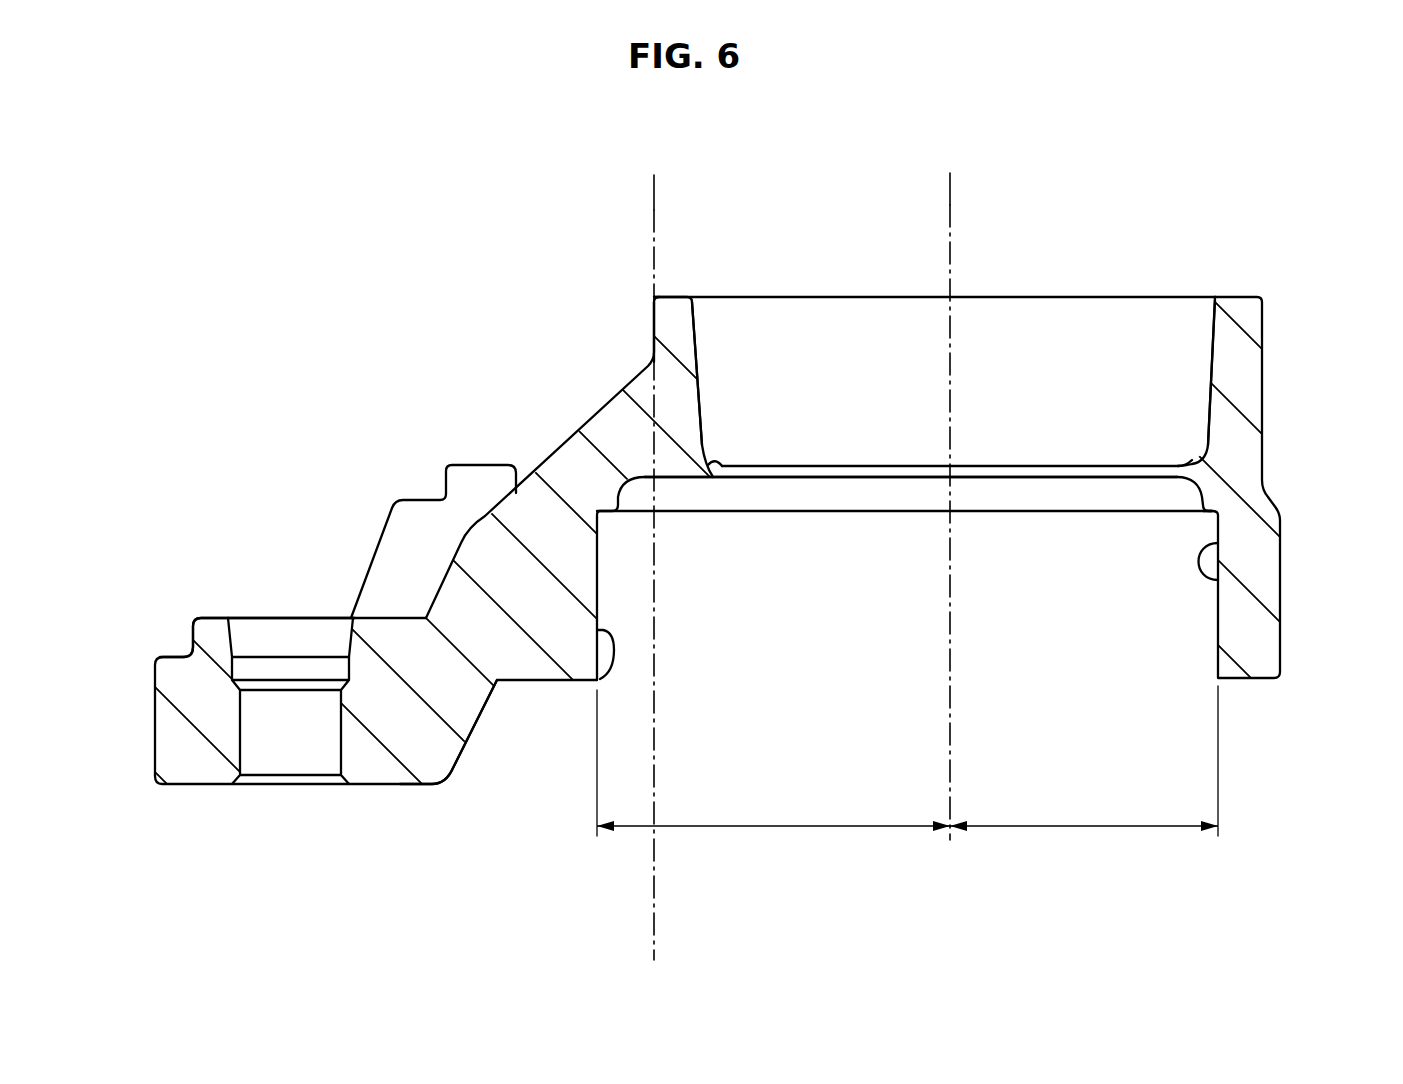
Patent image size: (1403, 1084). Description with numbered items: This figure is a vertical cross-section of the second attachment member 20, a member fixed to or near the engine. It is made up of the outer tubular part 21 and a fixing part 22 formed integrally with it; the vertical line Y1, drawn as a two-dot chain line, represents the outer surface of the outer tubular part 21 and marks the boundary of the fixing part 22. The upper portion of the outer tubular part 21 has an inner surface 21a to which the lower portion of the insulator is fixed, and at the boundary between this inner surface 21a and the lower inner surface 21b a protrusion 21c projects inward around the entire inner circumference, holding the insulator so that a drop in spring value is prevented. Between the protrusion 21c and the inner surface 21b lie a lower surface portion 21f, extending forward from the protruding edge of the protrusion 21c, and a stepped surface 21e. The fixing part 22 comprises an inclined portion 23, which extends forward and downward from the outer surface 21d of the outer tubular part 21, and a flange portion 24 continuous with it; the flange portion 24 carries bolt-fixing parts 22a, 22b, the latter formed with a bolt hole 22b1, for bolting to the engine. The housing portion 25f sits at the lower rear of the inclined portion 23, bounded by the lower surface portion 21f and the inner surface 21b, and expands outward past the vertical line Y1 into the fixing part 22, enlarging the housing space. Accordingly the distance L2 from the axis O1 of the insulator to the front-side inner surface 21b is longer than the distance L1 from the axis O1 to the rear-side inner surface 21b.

The second attachment member 20 is at (1186, 232).
The outer tubular part 21 is at (1262, 340).
The inner surface 21a is at (693, 343).
The inner surface 21b is at (594, 678).
The protrusion 21c is at (716, 462).
The outer surface 21d is at (652, 328).
The stepped surface 21e is at (606, 518).
The lower surface portion 21f is at (690, 478).
The fixing part 22 is at (328, 418).
The bolt-fixing part 22a is at (487, 463).
The bolt-fixing part 22b is at (207, 616).
The bolt hole 22b1 is at (233, 643).
The inclined portion 23 is at (602, 432).
The flange portion 24 is at (428, 766).
The housing portion 25f is at (681, 566).
The vertical line Y1 is at (654, 193).
The axis O1 is at (950, 230).
The distance L1 is at (1084, 761).
The distance L2 is at (773, 763).